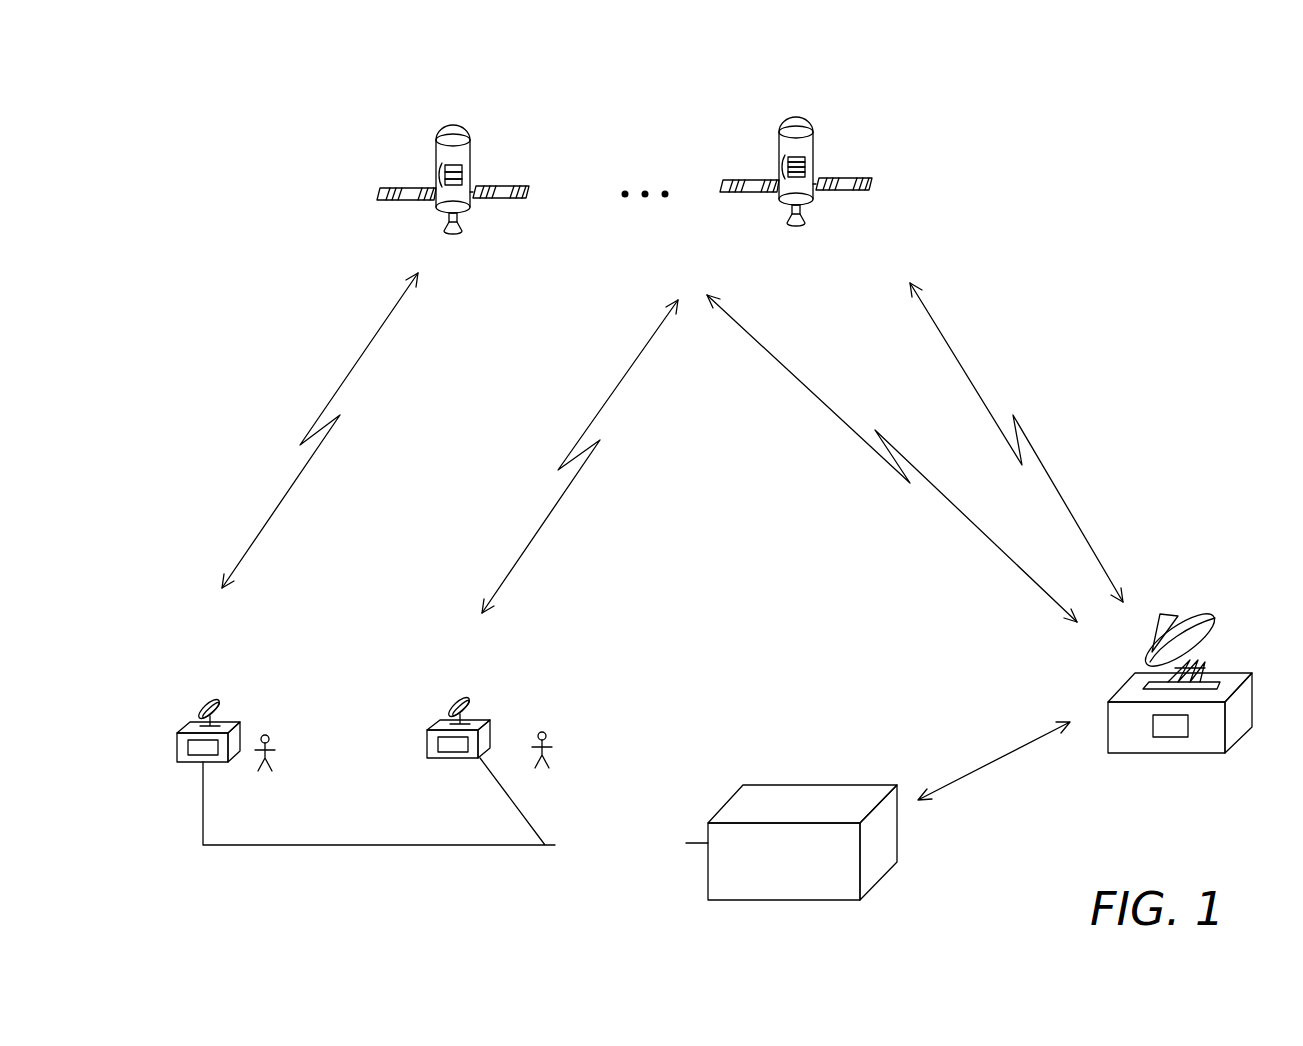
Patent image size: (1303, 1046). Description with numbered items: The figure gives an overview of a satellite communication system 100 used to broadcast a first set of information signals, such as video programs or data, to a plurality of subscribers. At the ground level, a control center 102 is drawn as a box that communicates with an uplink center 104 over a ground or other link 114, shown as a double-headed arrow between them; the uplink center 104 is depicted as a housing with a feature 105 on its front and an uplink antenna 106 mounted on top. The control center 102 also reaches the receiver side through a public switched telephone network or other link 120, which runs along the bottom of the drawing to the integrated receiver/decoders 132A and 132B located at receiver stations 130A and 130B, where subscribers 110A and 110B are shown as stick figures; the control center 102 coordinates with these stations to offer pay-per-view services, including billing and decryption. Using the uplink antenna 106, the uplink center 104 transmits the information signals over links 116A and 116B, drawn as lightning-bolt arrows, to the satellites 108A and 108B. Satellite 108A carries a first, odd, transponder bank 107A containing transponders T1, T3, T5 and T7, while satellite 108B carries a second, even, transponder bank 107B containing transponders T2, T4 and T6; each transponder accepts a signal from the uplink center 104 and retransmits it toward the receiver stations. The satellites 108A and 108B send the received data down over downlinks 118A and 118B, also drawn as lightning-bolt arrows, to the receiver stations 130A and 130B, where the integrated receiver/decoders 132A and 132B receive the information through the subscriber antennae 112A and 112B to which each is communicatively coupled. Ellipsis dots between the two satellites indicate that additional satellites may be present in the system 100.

The satellite communication system 100 is at (1080, 276).
The control center 102 is at (877, 883).
The uplink center 104 is at (1162, 755).
The gateway interface/window 105 is at (1178, 737).
The uplink antenna 106 is at (1216, 622).
The first (odd) transponder bank 107A is at (779, 169).
The second (even) transponder bank 107B is at (436, 177).
The satellite 108A is at (821, 195).
The satellite 108B is at (478, 203).
The subscriber 110A is at (563, 752).
The subscriber 110B is at (286, 753).
The subscriber antenna 112A is at (468, 702).
The subscriber antenna 112B is at (208, 702).
The ground link 114 is at (990, 760).
The feeder link 116A is at (1050, 473).
The feeder link 116B is at (810, 390).
The downlink 118A is at (630, 370).
The downlink 118B is at (350, 372).
The public switched telephone network link 120 is at (455, 806).
The receiver station 130A is at (482, 702).
The receiver station 130B is at (223, 692).
The integrated receiver/decoder 132A is at (437, 732).
The integrated receiver/decoder 132B is at (188, 735).
The transponder T1 is at (805, 159).
The transponder T2 is at (462, 168).
The transponder T3 is at (805, 165).
The transponder T4 is at (462, 175).
The transponder T5 is at (805, 170).
The transponder T6 is at (462, 182).
The transponder T7 is at (805, 175).